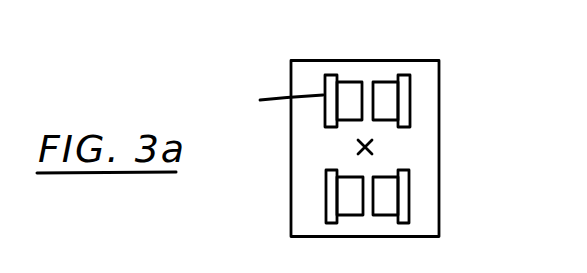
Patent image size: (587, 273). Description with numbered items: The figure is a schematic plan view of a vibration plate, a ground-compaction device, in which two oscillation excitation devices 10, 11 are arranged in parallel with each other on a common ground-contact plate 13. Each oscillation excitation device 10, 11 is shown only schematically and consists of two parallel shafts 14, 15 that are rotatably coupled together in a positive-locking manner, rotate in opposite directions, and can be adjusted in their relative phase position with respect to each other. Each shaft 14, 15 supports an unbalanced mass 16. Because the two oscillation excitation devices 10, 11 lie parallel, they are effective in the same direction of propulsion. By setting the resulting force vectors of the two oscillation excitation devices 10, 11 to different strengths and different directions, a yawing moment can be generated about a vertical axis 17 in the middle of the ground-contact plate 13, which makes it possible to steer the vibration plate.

The oscillation excitation device 10 is at (406, 66).
The oscillation excitation device 11 is at (410, 195).
The ground-contact plate 13 is at (427, 140).
The shaft 14 is at (270, 98).
The shaft 15 is at (400, 80).
The unbalanced mass 16 is at (345, 87).
The vertical axis 17 is at (370, 145).